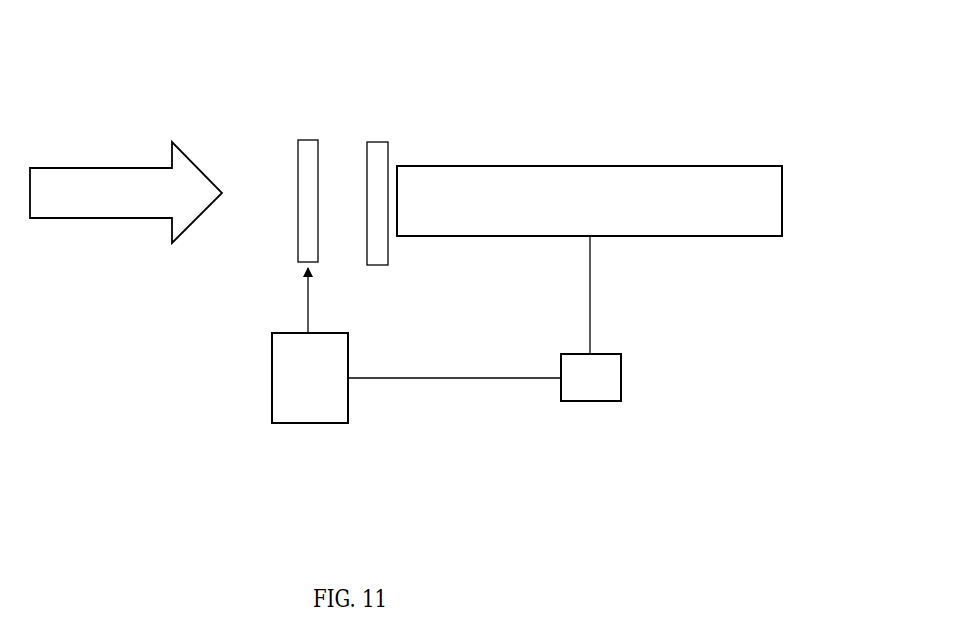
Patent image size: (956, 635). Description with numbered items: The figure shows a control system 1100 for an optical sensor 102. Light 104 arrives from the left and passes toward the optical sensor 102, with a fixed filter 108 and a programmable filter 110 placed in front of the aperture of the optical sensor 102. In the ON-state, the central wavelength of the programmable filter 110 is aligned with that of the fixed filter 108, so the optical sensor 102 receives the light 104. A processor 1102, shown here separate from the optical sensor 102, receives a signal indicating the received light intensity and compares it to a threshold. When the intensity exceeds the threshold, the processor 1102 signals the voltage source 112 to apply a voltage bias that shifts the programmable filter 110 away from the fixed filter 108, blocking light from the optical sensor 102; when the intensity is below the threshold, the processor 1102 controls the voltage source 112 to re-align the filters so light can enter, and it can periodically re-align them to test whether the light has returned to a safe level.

The control system 1100 is at (208, 100).
The light 104 is at (95, 165).
The programmable filter 110 is at (310, 139).
The fixed filter 108 is at (377, 141).
The optical sensor 102 is at (725, 163).
The voltage source 112 is at (309, 417).
The processor 1102 is at (598, 403).